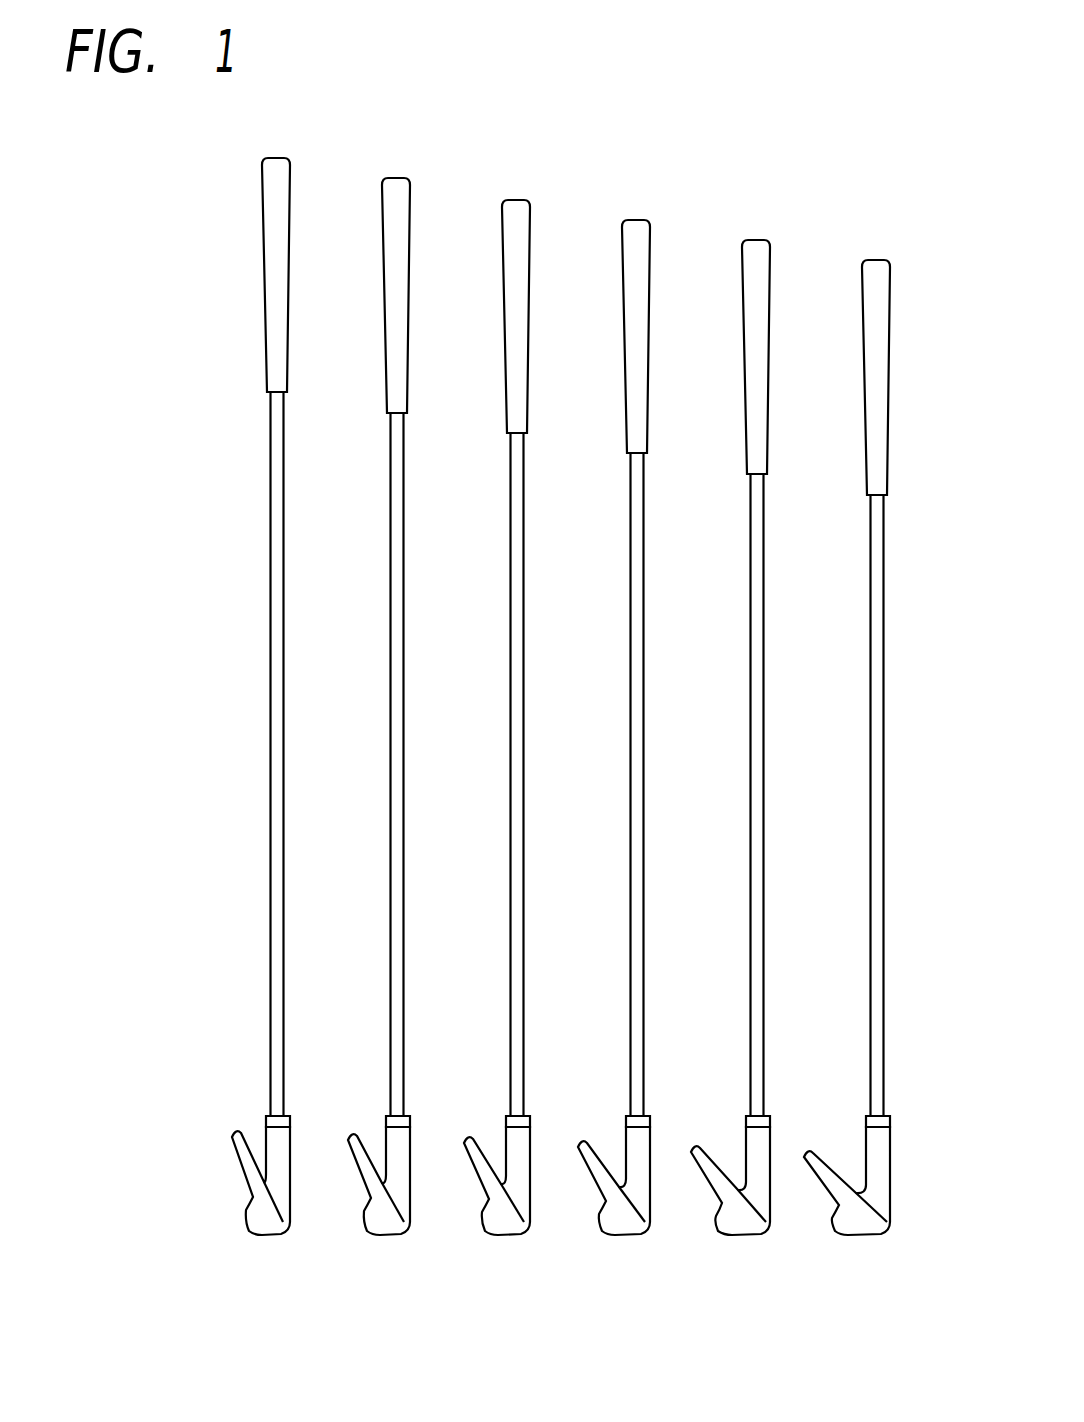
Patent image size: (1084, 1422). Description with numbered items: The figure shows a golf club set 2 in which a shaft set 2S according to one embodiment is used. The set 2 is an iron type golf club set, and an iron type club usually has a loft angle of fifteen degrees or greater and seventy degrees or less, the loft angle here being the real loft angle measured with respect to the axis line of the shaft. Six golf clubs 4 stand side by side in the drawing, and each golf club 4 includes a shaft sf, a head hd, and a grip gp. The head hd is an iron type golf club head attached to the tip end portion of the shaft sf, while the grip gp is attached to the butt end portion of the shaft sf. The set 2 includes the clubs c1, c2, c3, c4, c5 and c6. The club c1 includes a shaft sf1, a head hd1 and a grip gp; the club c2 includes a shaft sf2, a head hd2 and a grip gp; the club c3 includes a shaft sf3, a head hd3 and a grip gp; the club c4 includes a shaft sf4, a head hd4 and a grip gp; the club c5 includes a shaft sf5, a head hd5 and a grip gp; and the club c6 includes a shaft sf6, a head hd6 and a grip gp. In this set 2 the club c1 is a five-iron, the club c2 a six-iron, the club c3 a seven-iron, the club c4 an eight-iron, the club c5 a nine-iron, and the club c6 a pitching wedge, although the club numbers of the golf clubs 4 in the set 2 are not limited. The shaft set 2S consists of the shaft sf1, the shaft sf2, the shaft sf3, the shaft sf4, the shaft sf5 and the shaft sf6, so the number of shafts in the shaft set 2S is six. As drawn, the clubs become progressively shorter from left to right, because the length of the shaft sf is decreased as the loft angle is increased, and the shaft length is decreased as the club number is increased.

The golf club set 2 is at (555, 682).
The shaft set 2S is at (723, 76).
The golf club 4 is at (583, 642).
The club c1 is at (298, 127).
The club c2 is at (420, 143).
The club c3 is at (535, 168).
The club c4 is at (653, 190).
The club c5 is at (777, 207).
The club c6 is at (893, 228).
The grip gp is at (272, 310).
The shaft sf is at (528, 754).
The shaft sf1 is at (277, 740).
The shaft sf2 is at (400, 753).
The shaft sf3 is at (520, 762).
The shaft sf4 is at (640, 768).
The shaft sf5 is at (762, 780).
The shaft sf6 is at (880, 790).
The head hd is at (564, 1240).
The head hd1 is at (261, 1213).
The head hd2 is at (381, 1213).
The head hd3 is at (501, 1213).
The head hd4 is at (621, 1213).
The head hd5 is at (741, 1213).
The head hd6 is at (861, 1213).